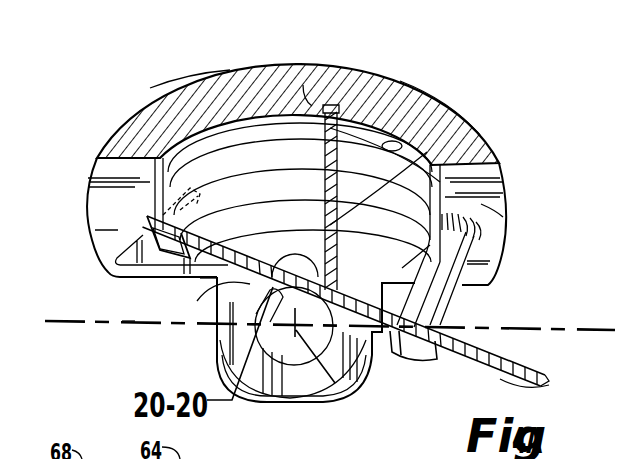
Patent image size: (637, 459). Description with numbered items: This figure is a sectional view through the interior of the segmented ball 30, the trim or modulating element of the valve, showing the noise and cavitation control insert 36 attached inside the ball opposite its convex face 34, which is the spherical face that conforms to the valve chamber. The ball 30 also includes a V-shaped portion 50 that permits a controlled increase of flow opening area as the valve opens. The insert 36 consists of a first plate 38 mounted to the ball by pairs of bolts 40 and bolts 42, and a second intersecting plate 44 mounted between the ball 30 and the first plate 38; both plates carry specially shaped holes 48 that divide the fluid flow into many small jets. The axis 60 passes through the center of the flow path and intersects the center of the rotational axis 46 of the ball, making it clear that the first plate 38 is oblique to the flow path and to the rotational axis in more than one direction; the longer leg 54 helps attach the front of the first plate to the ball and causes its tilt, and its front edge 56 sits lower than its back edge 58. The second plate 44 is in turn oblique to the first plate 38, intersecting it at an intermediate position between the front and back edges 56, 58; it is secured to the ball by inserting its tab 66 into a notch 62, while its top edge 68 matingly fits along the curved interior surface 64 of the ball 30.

The segmented ball 30 is at (155, 89).
The convex face 34 is at (183, 87).
The noise and cavitation control insert 36 is at (508, 342).
The first plate 38 is at (544, 368).
The bolts 40 is at (427, 366).
The bolts 42 is at (105, 254).
The second plate 44 is at (448, 112).
The rotational axis 46 is at (341, 398).
The holes 48 is at (458, 133).
The V-shaped portion 50 is at (481, 204).
The leg 54 is at (479, 237).
The front edge 56 is at (548, 388).
The back edge 58 is at (200, 282).
The axis 60 is at (128, 320).
The notch 62 is at (382, 143).
The curved interior surface 64 is at (390, 147).
The tab 66 is at (303, 85).
The top edge 68 is at (337, 106).